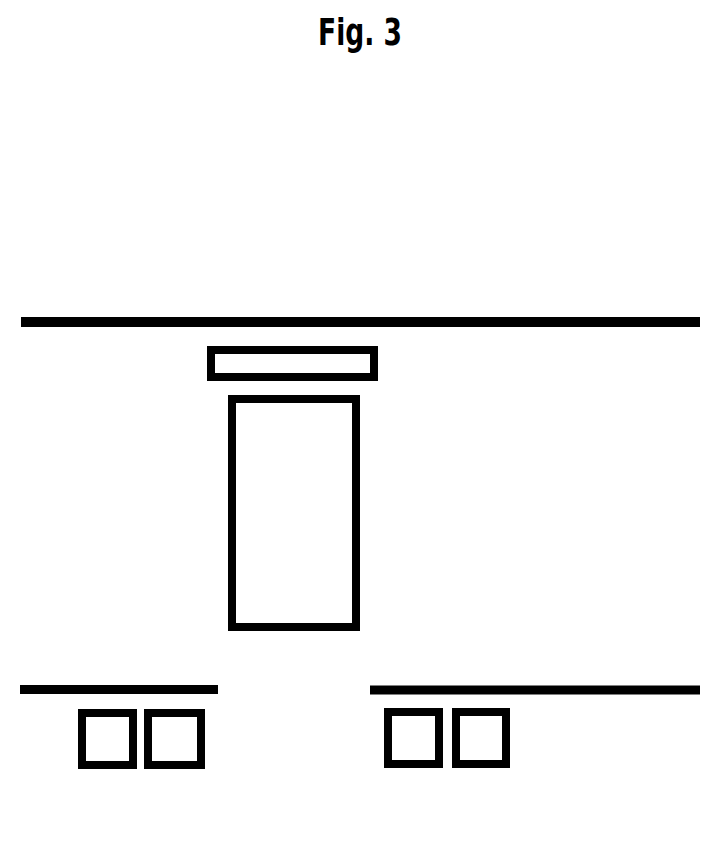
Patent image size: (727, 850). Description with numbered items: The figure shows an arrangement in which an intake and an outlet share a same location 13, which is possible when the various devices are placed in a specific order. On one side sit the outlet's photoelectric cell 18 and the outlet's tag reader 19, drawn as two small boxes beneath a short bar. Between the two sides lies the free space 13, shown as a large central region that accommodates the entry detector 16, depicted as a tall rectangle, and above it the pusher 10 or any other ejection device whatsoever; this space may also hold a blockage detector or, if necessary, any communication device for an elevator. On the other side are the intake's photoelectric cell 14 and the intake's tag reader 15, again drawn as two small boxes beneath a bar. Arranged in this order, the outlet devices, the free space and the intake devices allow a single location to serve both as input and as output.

The pusher 10 is at (315, 359).
The free space 13 is at (360, 687).
The intake's photoelectric cell 14 is at (404, 764).
The intake's tag reader 15 is at (483, 764).
The entry detector 16 is at (294, 513).
The outlet's photoelectric cell 18 is at (101, 769).
The outlet's tag reader 19 is at (174, 766).